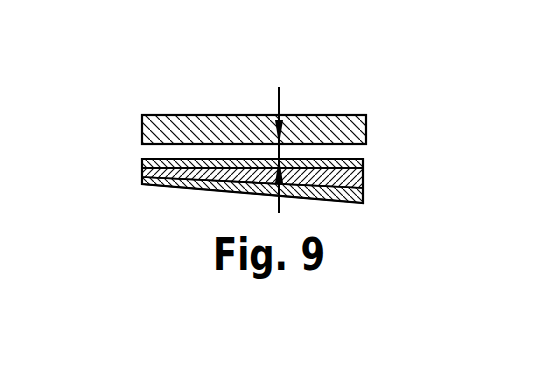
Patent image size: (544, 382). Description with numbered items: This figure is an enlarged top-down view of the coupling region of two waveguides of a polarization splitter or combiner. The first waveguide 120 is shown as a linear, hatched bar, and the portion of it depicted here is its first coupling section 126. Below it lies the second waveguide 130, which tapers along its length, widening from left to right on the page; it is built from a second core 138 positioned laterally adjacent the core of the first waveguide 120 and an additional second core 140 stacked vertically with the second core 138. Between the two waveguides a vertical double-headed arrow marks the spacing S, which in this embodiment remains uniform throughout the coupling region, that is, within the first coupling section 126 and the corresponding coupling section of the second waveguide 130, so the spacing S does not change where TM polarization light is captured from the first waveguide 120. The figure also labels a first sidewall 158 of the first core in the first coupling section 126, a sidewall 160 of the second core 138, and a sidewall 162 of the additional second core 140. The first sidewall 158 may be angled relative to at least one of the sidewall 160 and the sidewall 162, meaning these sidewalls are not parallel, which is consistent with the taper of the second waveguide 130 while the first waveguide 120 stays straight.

The first waveguide 120 is at (382, 114).
The first coupling section 126 is at (176, 126).
The first sidewall 158 is at (147, 150).
The second waveguide 130 is at (306, 199).
The additional second core 140 is at (364, 186).
The second core 138 is at (352, 205).
The sidewall of additional second core 162 is at (238, 162).
The sidewall of second core 160 is at (312, 168).
The spacing S is at (281, 110).